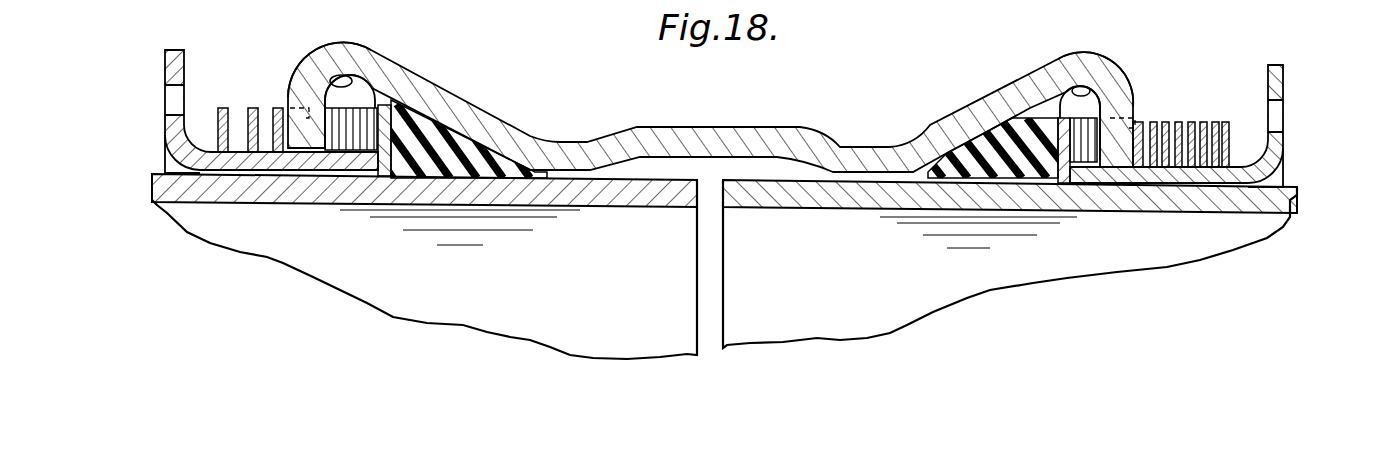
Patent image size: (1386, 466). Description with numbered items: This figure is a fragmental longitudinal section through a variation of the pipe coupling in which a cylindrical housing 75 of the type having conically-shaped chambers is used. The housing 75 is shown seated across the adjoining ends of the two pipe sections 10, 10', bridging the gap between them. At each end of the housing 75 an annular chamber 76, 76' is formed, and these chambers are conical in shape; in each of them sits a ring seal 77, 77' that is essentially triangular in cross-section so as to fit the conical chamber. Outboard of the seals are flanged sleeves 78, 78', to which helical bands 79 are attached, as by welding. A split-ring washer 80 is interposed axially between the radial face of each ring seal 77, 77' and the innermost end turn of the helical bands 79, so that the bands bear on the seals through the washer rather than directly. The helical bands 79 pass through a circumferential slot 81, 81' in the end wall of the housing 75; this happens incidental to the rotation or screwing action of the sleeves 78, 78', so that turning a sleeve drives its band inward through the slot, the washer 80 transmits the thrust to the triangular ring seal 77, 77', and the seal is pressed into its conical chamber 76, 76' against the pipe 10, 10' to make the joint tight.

The housing body 10 is at (400, 248).
The housing body (second part) 10' is at (1037, 247).
The cylindrical housing 75 is at (707, 126).
The annular chamber 76 is at (331, 76).
The annular chamber 76' is at (1114, 87).
The ring seal 77 is at (448, 114).
The ring seal 77' is at (972, 119).
The flanged sleeve 78 is at (242, 111).
The flanged sleeve 78' is at (1212, 126).
The helical band 79 is at (255, 107).
The split-ring washer 80 is at (379, 104).
The circumferential slot 81 is at (315, 89).
The circumferential slot 81' is at (1133, 112).